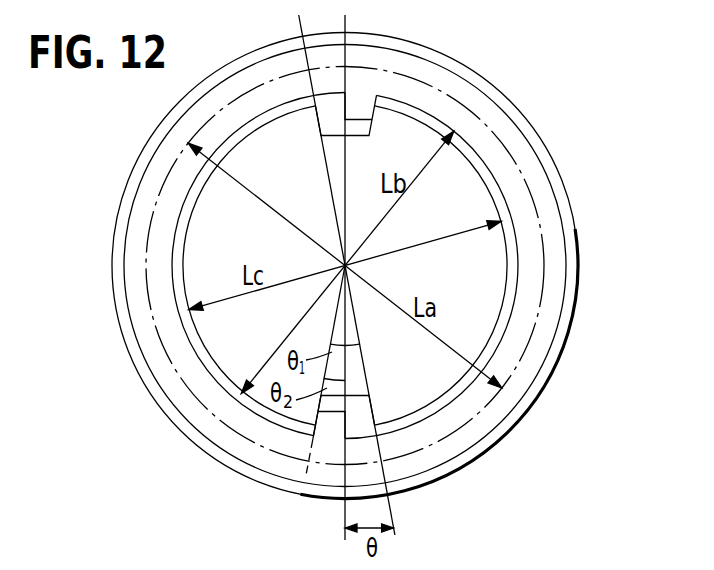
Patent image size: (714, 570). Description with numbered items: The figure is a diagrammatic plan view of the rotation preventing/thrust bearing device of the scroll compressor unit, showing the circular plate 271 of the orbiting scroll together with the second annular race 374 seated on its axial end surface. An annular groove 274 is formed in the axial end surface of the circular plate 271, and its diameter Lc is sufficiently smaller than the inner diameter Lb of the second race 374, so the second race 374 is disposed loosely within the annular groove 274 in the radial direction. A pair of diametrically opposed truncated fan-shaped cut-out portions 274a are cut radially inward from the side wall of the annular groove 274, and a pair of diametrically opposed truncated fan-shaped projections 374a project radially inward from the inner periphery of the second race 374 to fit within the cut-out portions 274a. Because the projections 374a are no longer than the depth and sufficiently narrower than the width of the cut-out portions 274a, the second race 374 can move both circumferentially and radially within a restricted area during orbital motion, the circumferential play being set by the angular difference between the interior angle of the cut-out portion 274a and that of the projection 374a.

The circular plate 271 is at (576, 265).
The annular groove 274 is at (492, 193).
The cut-out portion 274a is at (317, 125).
The second annular race 374 is at (482, 107).
The projection 374a is at (360, 112).